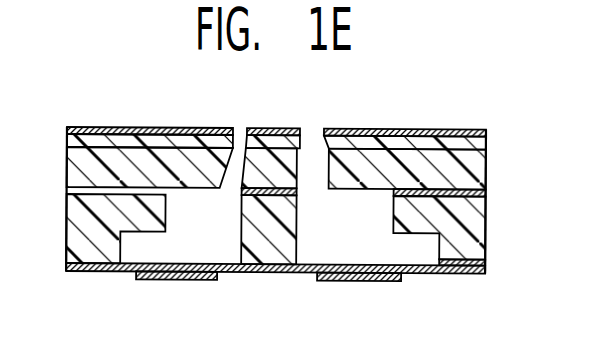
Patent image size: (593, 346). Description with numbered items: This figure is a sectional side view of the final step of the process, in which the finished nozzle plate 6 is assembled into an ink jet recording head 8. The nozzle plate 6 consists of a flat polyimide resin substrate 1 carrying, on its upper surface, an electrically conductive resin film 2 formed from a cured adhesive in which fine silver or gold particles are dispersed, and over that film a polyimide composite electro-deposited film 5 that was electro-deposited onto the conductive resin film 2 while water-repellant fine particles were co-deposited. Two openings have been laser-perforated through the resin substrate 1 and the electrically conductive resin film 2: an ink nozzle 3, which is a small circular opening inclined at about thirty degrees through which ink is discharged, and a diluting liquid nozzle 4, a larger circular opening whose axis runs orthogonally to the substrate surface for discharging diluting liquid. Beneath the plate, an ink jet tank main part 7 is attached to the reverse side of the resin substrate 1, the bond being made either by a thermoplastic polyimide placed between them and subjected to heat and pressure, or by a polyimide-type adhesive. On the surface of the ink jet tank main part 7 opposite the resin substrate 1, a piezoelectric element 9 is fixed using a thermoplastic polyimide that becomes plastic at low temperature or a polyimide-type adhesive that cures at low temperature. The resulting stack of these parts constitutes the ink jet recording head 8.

The resin substrate 1 is at (83, 165).
The electrically conductive resin film 2 is at (88, 137).
The ink nozzle 3 is at (231, 157).
The diluting liquid nozzle 4 is at (303, 158).
The polyimide composite electro-deposited film 5 is at (130, 127).
The nozzle plate 6 is at (499, 163).
The ink jet tank main part 7 is at (499, 231).
The ink jet recording head 8 is at (443, 120).
The piezoelectric element 9 is at (173, 283).